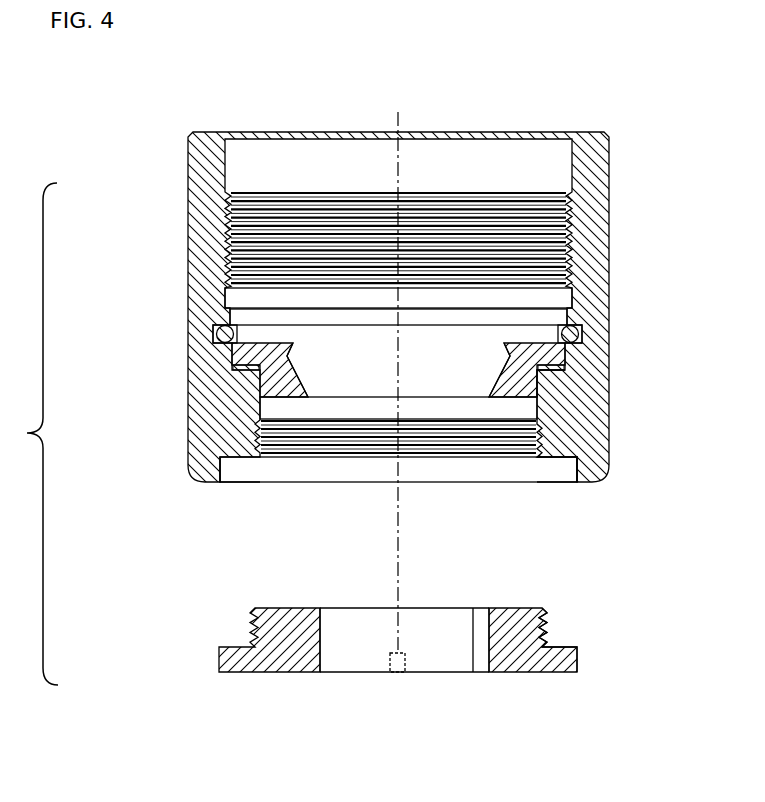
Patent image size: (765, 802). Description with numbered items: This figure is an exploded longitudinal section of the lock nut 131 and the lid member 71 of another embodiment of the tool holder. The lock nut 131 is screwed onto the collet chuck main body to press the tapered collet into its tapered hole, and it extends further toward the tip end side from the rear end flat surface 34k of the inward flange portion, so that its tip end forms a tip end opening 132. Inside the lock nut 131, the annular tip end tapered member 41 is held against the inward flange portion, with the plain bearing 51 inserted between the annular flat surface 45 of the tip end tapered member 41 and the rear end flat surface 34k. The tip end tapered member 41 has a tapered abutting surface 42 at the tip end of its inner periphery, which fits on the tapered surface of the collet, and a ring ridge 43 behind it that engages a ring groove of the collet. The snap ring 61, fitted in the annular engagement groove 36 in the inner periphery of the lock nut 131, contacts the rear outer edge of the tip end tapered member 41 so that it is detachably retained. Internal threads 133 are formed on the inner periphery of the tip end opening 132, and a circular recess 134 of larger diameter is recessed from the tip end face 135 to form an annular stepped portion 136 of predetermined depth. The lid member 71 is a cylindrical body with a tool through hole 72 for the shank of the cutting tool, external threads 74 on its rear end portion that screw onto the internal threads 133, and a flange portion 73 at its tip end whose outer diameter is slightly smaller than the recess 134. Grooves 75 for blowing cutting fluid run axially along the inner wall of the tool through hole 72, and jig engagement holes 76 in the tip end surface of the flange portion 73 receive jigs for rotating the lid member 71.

The lock nut 131 is at (610, 235).
The internal threads 133 is at (258, 437).
The ring ridge 43 is at (490, 342).
The annular engagement groove 36 is at (582, 326).
The snap ring 61 is at (582, 339).
The tip end tapered member 41 is at (525, 338).
The tapered abutting surface 42 is at (493, 380).
The rear end flat surface 34k is at (560, 367).
The plain bearing 51 is at (558, 377).
The annular flat surface 45 is at (572, 398).
The tip end opening 132 is at (372, 440).
The tip end face 135 is at (216, 486).
The annular stepped portion 136 is at (244, 460).
The recess 134 is at (570, 485).
The lid member 71 is at (219, 657).
The tool through hole 72 is at (322, 652).
The grooves 75 is at (481, 652).
The jig engagement holes 76 is at (400, 673).
The external threads 74 is at (545, 620).
The flange portion 73 is at (577, 660).